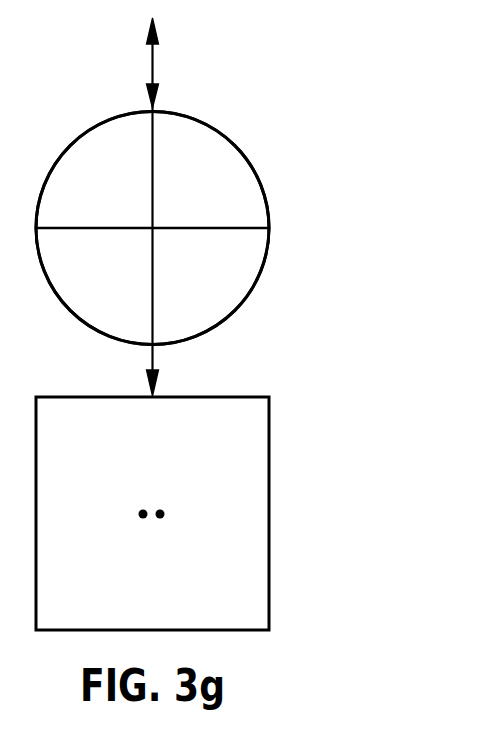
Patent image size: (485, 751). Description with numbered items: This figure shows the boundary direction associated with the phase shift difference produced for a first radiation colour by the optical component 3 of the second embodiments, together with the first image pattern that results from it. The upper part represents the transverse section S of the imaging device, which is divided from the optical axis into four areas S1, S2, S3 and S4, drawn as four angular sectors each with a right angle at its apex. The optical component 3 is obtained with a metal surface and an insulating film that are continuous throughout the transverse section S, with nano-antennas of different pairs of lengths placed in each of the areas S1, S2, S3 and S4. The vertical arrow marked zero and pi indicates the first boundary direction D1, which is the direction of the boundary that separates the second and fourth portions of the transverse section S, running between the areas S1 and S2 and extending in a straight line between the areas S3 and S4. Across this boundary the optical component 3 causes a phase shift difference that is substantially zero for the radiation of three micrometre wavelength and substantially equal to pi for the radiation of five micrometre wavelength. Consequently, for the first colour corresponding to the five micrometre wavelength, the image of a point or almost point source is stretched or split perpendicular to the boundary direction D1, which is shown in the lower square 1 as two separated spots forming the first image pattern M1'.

The optical component 3 is at (207, 118).
The transverse section S is at (253, 165).
The first boundary direction D1 is at (155, 56).
The area S1 is at (92, 192).
The area S2 is at (196, 192).
The area S3 is at (196, 271).
The area S4 is at (92, 271).
The substrate / sample 1 is at (230, 396).
The first image pattern M1' is at (193, 474).